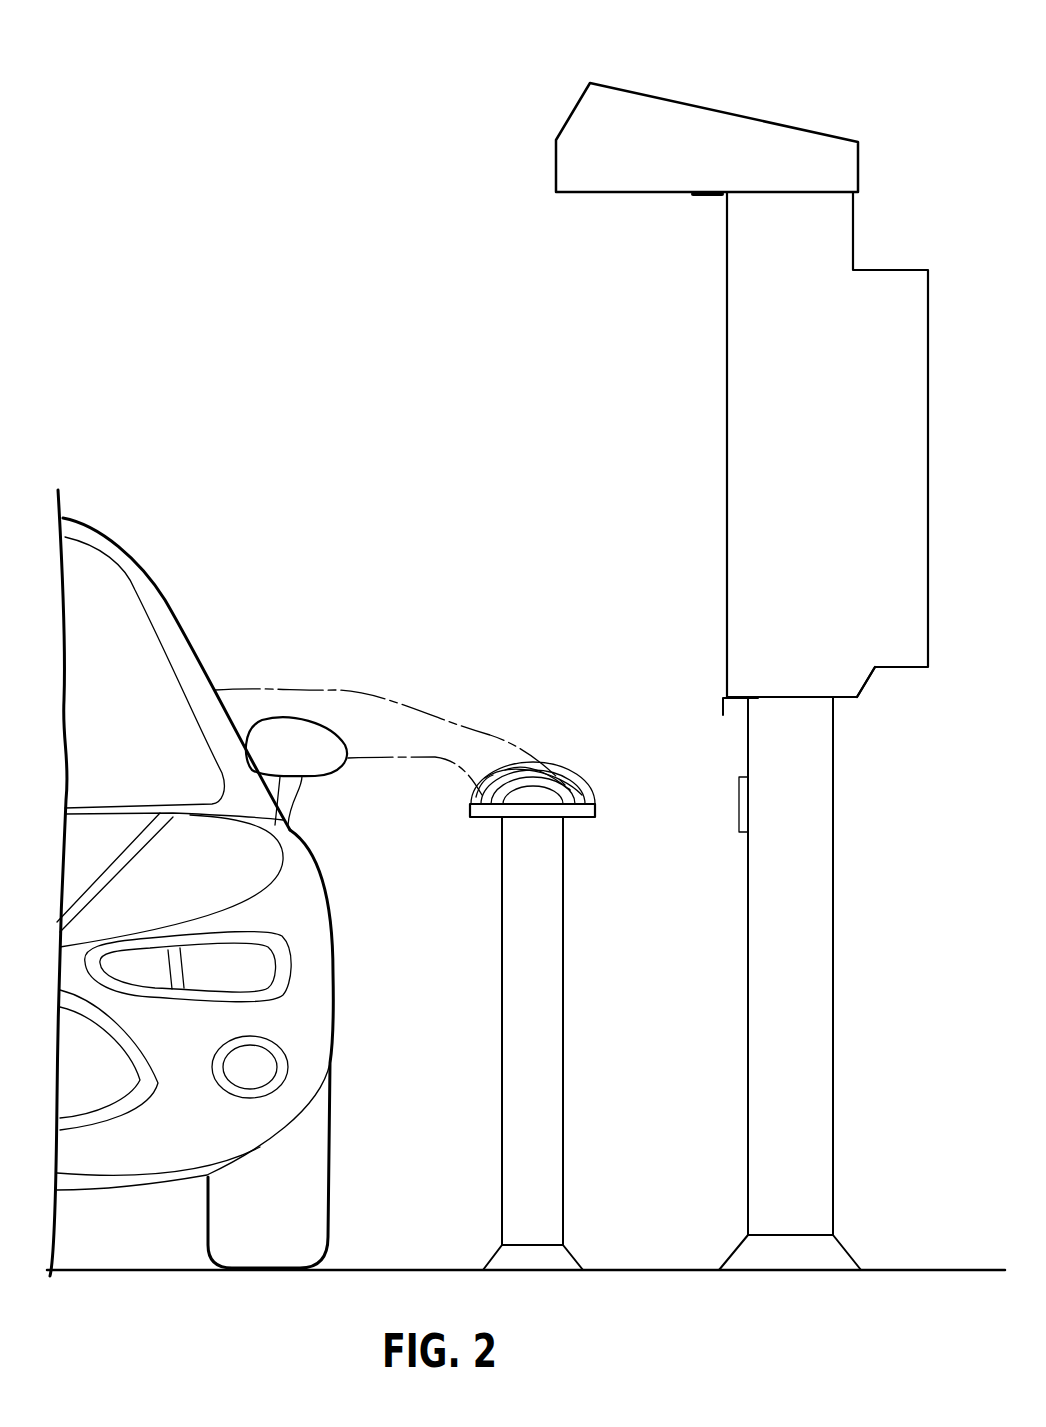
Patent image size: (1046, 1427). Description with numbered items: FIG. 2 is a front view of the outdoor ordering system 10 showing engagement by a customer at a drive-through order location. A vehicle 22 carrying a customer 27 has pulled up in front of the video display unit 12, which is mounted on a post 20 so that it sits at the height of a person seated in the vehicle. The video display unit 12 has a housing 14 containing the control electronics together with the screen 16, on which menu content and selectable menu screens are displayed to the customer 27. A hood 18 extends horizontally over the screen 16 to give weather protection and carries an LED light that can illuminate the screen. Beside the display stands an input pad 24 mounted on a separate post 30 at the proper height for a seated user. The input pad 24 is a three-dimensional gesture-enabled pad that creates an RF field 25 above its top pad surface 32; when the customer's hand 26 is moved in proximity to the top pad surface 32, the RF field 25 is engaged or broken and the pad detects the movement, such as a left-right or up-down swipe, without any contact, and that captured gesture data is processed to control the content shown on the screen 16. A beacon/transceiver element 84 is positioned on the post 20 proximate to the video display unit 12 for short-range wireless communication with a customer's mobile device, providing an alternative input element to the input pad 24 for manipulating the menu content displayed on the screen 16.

The outdoor ordering system 10 is at (520, 76).
The video display unit 12 is at (806, 439).
The housing 14 is at (867, 683).
The screen 16 is at (722, 404).
The hood 18 is at (752, 114).
The post 20 is at (806, 1063).
The vehicle 22 is at (318, 972).
The input pad 24 is at (606, 813).
The RF field 25 is at (580, 782).
The user's hand 26 is at (500, 740).
The customer 27 is at (335, 690).
The post 30 is at (551, 1125).
The top pad surface 32 is at (485, 798).
The beacon/transceiver element 84 is at (739, 812).